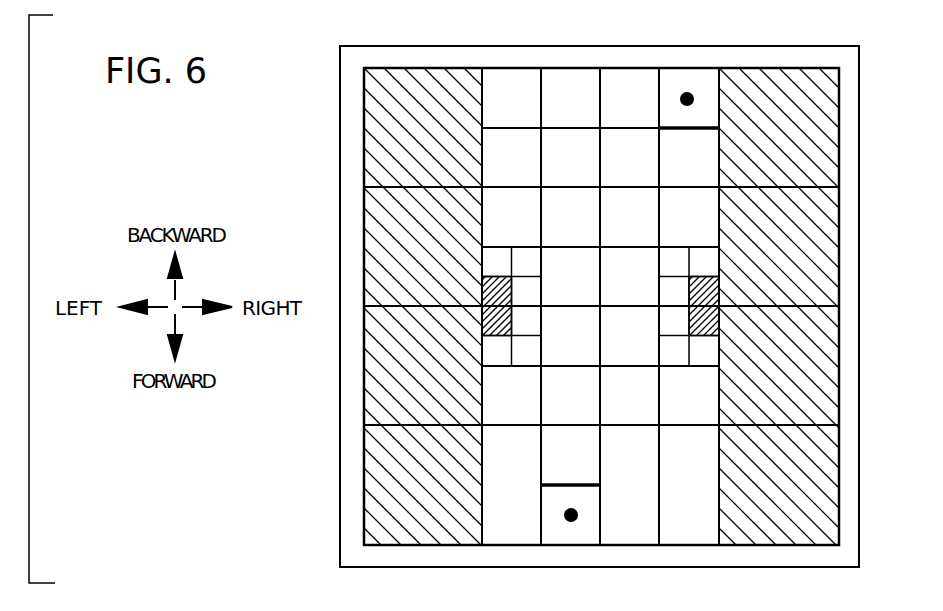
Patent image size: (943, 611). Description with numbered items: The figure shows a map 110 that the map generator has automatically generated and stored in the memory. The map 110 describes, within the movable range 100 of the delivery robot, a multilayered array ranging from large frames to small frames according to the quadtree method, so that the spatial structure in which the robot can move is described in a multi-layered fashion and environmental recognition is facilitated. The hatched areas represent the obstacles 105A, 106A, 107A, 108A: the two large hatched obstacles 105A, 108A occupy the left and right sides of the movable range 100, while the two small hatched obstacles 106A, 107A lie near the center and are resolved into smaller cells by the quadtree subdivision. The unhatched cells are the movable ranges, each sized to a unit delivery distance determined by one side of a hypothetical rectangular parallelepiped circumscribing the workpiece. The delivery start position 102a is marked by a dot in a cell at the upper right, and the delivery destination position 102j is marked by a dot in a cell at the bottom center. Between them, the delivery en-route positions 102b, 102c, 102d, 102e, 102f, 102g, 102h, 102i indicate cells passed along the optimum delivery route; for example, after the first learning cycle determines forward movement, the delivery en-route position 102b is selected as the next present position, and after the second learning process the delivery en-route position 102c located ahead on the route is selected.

The movable range 100 is at (340, 512).
The map 110 is at (323, 188).
The obstacle 105A is at (418, 75).
The obstacle 108A is at (801, 80).
The obstacle 106A is at (493, 275).
The obstacle 107A is at (708, 338).
The delivery start position 102a is at (690, 78).
The delivery en-route position 102b is at (663, 157).
The delivery en-route position 102c is at (675, 240).
The delivery en-route position 102d is at (630, 202).
The delivery en-route position 102e is at (568, 202).
The delivery en-route position 102f is at (585, 297).
The delivery en-route position 102g is at (585, 356).
The delivery en-route position 102h is at (593, 416).
The delivery en-route position 102i is at (597, 462).
The delivery destination position 102j is at (570, 546).